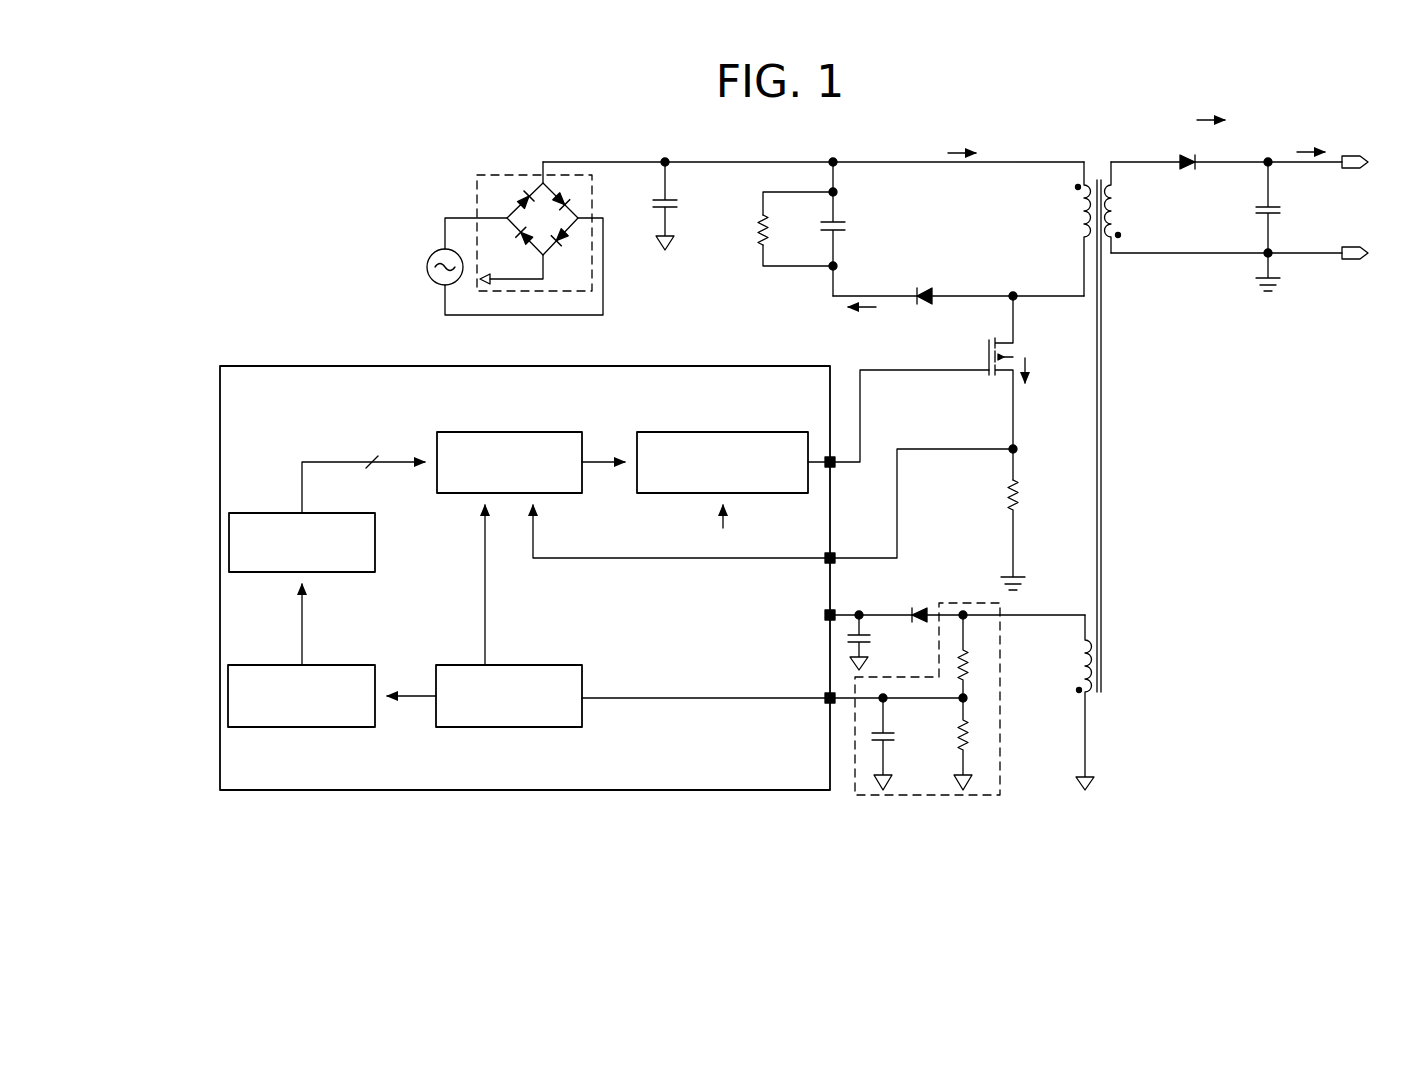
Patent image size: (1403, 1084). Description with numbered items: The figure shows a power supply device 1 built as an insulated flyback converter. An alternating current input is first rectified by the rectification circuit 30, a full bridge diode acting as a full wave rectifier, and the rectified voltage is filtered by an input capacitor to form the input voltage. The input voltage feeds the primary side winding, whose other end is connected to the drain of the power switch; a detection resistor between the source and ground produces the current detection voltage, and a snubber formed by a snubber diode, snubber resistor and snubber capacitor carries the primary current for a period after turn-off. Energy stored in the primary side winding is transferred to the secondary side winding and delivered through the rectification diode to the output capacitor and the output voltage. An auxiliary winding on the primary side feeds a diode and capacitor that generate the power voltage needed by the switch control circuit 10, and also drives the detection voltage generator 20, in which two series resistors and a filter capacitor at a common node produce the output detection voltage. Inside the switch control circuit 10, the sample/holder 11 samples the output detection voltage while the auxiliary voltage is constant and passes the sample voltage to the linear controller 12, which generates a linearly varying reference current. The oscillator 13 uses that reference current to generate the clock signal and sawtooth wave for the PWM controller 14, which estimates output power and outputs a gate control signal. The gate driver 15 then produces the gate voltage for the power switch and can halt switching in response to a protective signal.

The power supply device 1 is at (1333, 105).
The switch control circuit 10 is at (313, 365).
The sample/holder 11 is at (509, 728).
The linear controller 12 is at (302, 728).
The oscillator 13 is at (255, 573).
The PWM controller 14 is at (509, 429).
The gate driver 15 is at (722, 429).
The detection voltage generator 20 is at (1000, 775).
The rectification circuit 30 is at (489, 174).